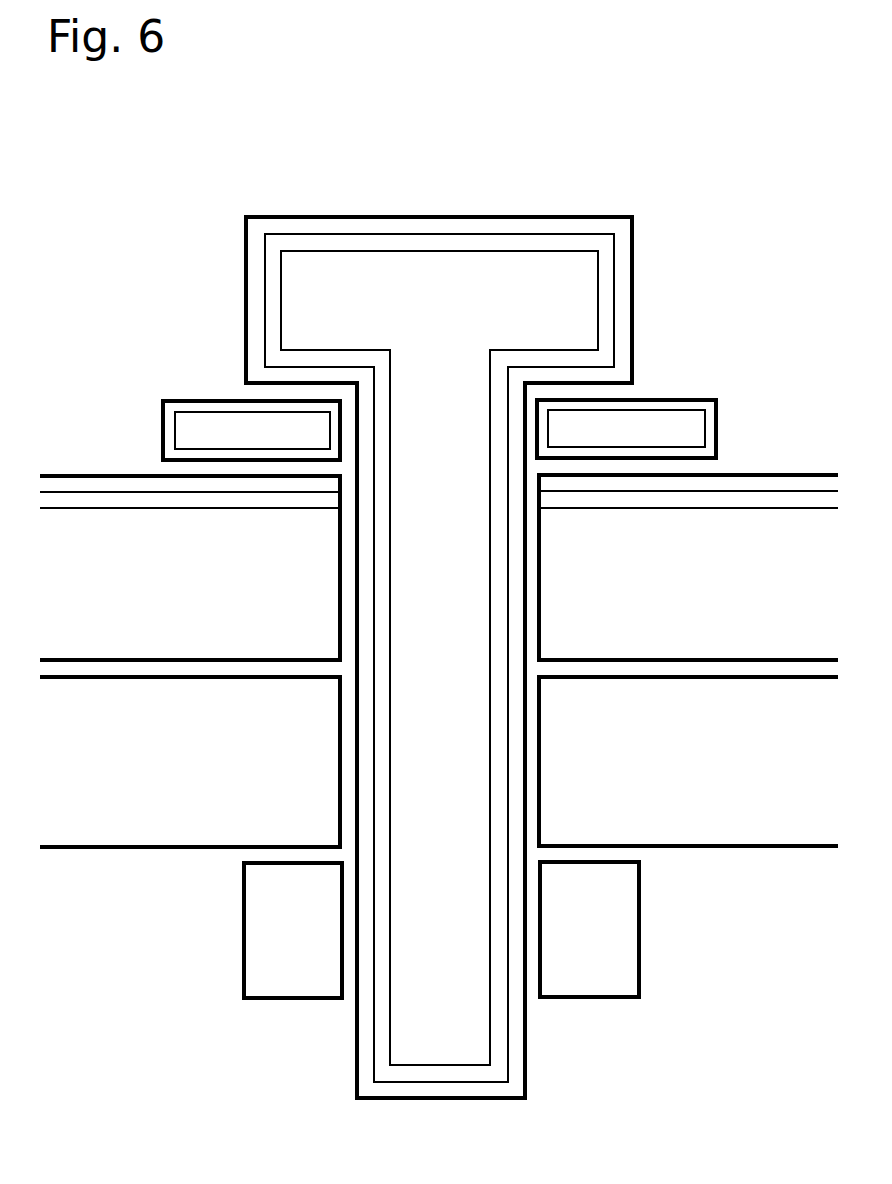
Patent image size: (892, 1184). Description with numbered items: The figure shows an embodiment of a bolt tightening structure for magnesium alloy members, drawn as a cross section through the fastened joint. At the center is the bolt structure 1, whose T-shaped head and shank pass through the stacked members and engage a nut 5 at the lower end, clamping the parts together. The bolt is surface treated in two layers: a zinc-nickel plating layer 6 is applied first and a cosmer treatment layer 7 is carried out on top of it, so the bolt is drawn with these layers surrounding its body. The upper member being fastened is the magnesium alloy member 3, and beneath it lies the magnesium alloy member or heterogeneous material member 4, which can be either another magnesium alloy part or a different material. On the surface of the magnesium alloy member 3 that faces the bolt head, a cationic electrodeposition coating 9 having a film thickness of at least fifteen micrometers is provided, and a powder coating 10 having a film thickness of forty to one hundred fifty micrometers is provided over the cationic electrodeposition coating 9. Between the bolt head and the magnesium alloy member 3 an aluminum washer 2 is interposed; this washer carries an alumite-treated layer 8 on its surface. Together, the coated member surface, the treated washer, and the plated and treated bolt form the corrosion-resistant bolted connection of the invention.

The bolt structure 1 is at (655, 291).
The aluminum washer 2 is at (677, 422).
The magnesium alloy member 3 is at (795, 528).
The magnesium alloy member or heterogeneous material member 4 is at (750, 817).
The nut 5 is at (615, 947).
The zinc-nickel plating layer 6 is at (472, 243).
The cosmer treatment layer 7 is at (313, 228).
The alumite-treated layer 8 is at (710, 432).
The cationic electrodeposition coating 9 is at (122, 500).
The powder coating 10 is at (69, 482).